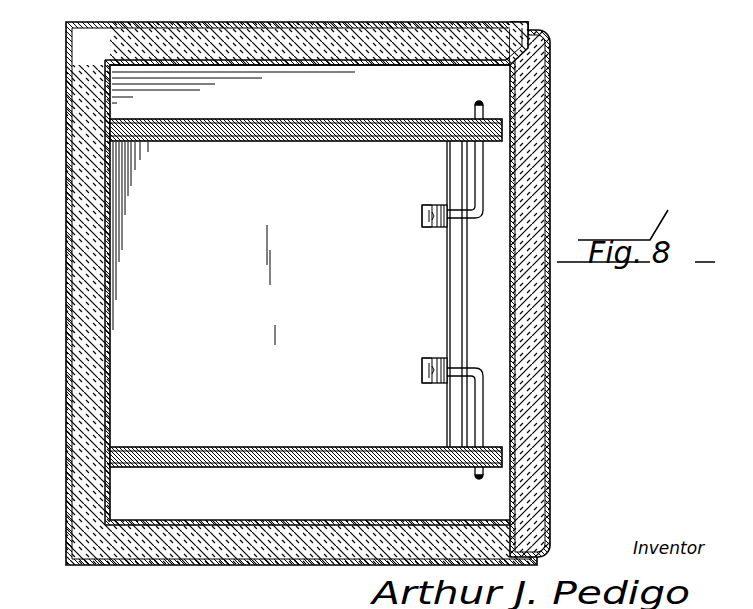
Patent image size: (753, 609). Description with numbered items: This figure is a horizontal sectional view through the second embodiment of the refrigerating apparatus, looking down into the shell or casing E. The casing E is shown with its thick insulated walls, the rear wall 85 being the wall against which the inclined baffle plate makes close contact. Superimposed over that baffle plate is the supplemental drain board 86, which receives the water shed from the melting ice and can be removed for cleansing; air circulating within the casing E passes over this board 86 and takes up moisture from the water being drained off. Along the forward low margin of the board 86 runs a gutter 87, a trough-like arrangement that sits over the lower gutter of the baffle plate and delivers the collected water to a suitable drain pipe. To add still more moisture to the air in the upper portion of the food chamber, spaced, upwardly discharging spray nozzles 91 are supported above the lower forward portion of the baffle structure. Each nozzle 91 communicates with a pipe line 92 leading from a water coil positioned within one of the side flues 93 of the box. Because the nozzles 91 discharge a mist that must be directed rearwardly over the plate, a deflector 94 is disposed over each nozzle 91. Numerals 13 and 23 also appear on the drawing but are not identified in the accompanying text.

The shell or casing E is at (274, 304).
The inner lining 13 is at (392, 80).
The top wall 23 is at (297, 32).
The rear wall 85 is at (93, 357).
The supplemental drain board 86 is at (150, 288).
The gutter 87 is at (455, 286).
The spray nozzle 91 is at (422, 215).
The pipe line 92 is at (480, 170).
The side flue 93 is at (217, 495).
The deflector 94 is at (424, 205).